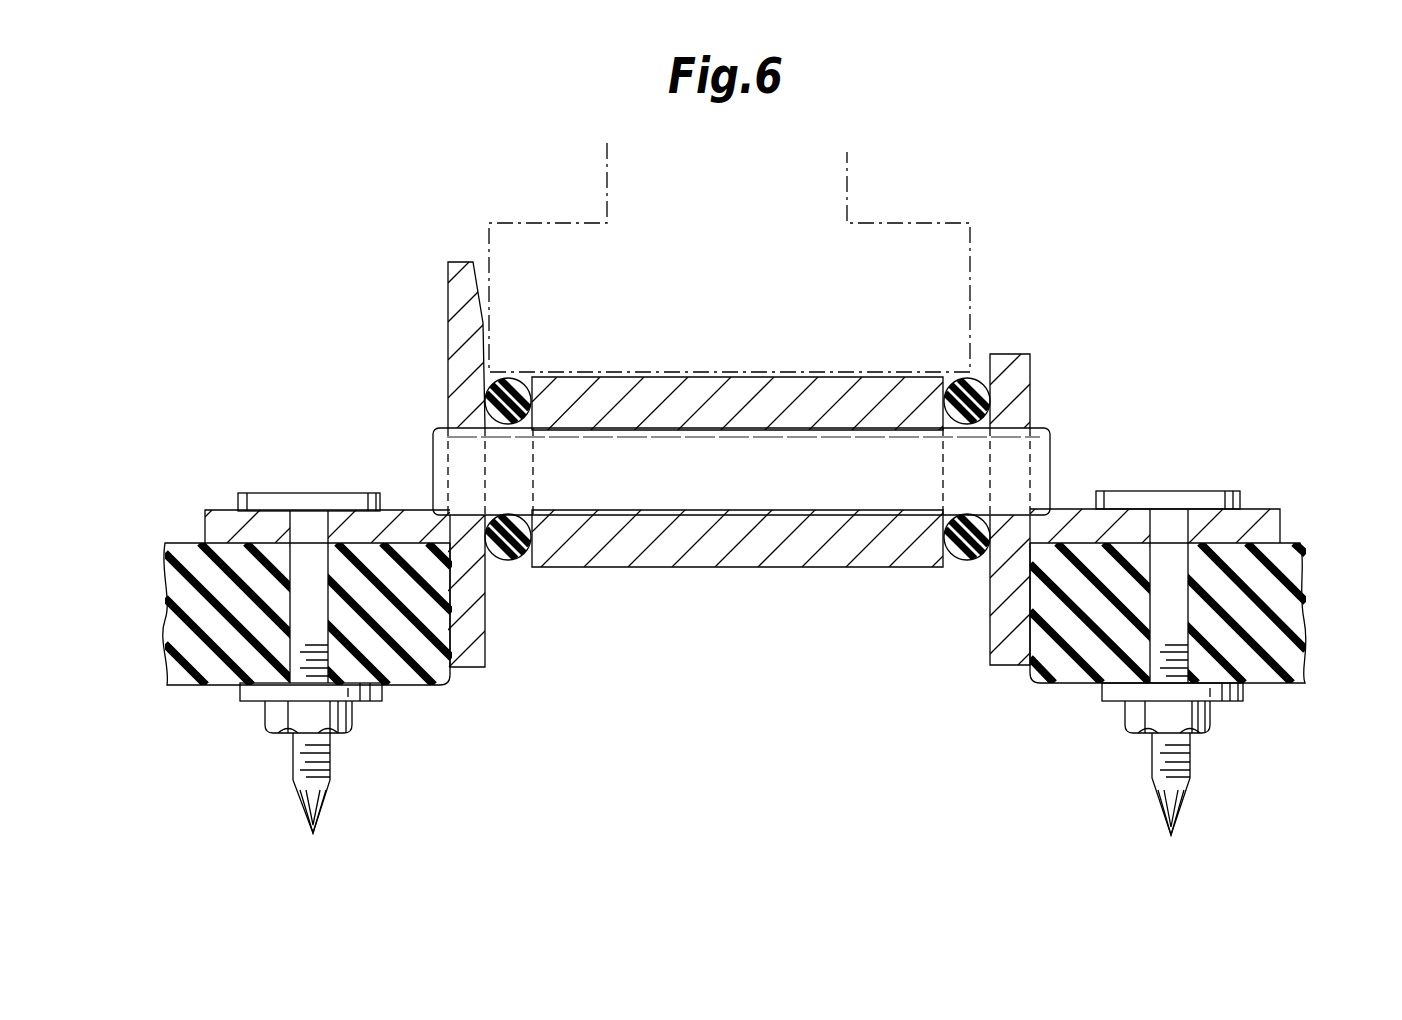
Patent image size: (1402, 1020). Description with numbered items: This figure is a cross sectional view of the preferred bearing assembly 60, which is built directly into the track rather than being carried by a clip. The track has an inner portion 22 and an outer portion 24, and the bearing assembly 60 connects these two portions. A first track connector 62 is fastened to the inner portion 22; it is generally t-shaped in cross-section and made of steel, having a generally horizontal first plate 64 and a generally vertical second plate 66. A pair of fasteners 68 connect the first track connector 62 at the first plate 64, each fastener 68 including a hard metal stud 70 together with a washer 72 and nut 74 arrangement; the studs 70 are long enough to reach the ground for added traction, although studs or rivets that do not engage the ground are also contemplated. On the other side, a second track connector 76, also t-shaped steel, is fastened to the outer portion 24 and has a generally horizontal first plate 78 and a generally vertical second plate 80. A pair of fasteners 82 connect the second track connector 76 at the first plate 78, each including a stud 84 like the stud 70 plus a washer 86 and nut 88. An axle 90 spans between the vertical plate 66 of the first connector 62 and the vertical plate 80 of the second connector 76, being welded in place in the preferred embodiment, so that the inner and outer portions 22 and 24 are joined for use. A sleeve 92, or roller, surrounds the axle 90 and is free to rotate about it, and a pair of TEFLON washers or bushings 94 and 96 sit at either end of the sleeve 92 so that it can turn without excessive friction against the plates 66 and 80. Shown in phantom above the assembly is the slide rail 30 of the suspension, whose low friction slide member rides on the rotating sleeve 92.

The inner portion of the track 22 is at (1297, 658).
The outer portion of the track 24 is at (190, 652).
The slide rail 30 is at (650, 230).
The bearing assembly 60 is at (1060, 253).
The first track connector 62 is at (968, 650).
The first plate 64 is at (1262, 516).
The second plate 66 is at (1031, 388).
The fastener 68 is at (1150, 488).
The stud 70 is at (1190, 797).
The washer 72 is at (1232, 700).
The nut 74 is at (1205, 733).
The second track connector 76 is at (478, 685).
The first plate 78 is at (212, 520).
The second plate 80 is at (460, 345).
The fastener 82 is at (320, 475).
The stud 84 is at (305, 815).
The washer 86 is at (232, 700).
The nut 88 is at (270, 727).
The axle 90 is at (712, 487).
The sleeve 92 is at (805, 560).
The bushing 94 is at (518, 567).
The bushing 96 is at (962, 565).